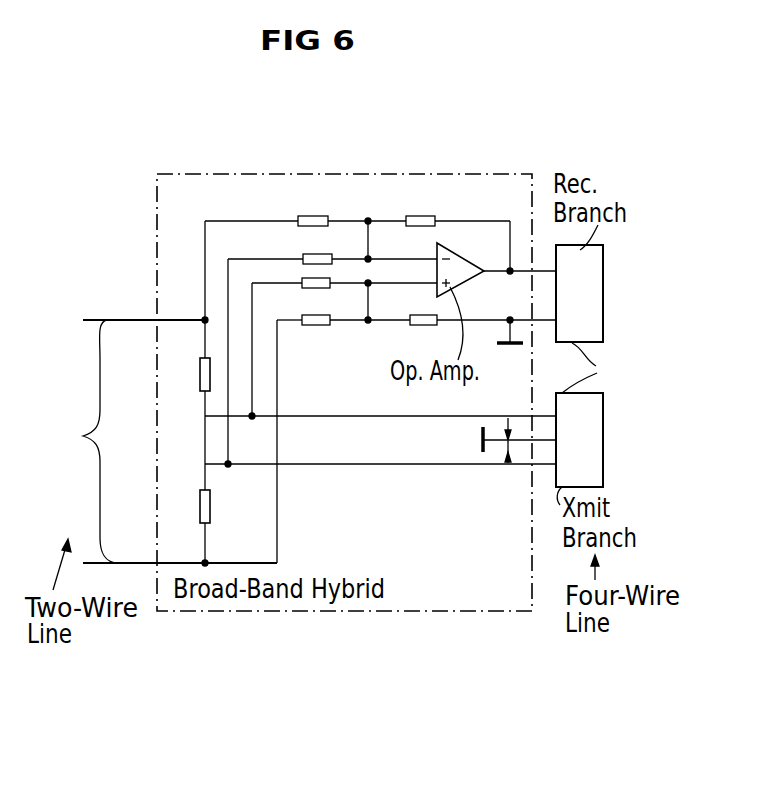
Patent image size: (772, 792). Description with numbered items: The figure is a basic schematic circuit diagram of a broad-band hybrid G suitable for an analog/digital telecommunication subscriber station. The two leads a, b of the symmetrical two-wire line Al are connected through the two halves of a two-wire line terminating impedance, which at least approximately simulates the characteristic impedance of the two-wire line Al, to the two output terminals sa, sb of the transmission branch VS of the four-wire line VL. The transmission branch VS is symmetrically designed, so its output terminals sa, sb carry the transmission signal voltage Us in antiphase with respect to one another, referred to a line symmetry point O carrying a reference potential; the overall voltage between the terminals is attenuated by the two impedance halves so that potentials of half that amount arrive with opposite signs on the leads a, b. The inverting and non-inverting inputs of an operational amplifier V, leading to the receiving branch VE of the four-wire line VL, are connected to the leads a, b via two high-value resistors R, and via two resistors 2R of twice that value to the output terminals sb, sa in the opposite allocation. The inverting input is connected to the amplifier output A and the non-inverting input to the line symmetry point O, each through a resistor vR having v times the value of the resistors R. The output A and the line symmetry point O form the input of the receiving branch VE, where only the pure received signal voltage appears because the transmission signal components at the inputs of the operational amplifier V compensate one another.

The broad-band hybrid G is at (428, 559).
The two-wire line lead a is at (144, 304).
The two-wire line lead b is at (180, 549).
The two-wire line Al is at (88, 441).
The resistor R is at (314, 273).
The resistor 2R is at (302, 273).
The resistor vR is at (421, 274).
The operational amplifier V is at (460, 280).
The operational amplifier output A is at (516, 256).
The line symmetry point O is at (473, 452).
The receiving branch VE is at (579, 293).
The transmission branch VS is at (579, 440).
The four-wire line VL is at (591, 368).
The output terminal sa is at (520, 414).
The output terminal sb is at (520, 464).
The transmission signal voltage Us is at (506, 430).